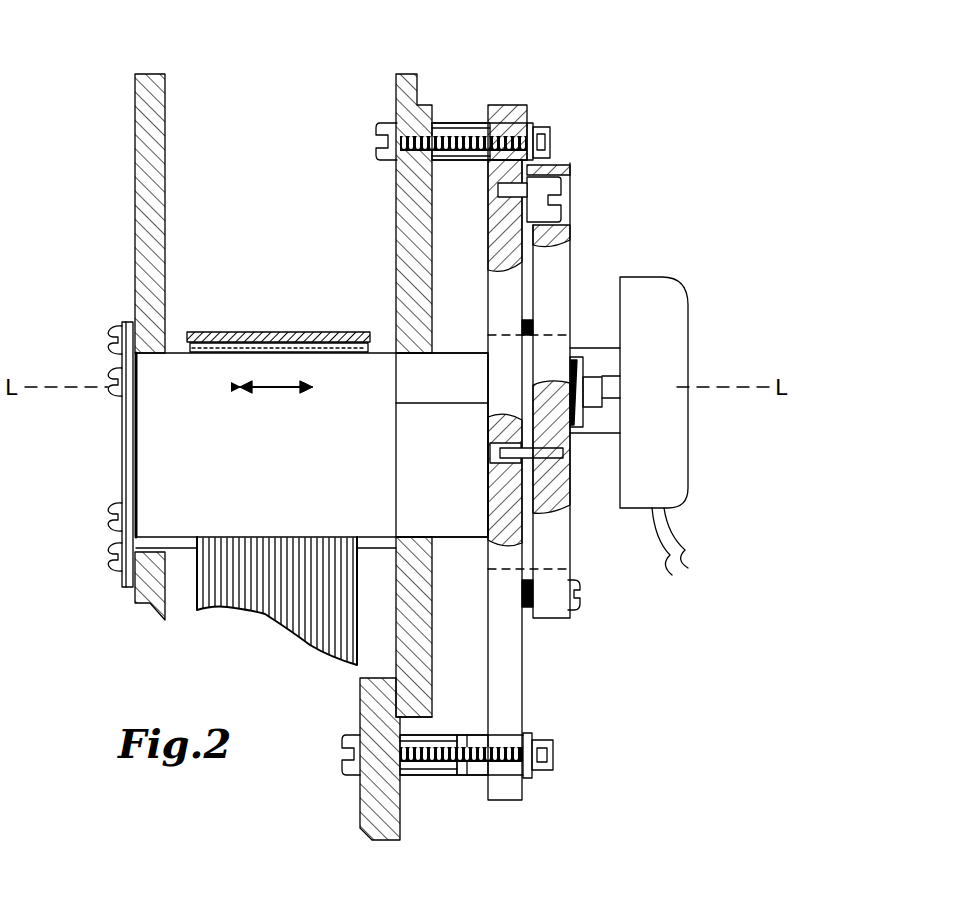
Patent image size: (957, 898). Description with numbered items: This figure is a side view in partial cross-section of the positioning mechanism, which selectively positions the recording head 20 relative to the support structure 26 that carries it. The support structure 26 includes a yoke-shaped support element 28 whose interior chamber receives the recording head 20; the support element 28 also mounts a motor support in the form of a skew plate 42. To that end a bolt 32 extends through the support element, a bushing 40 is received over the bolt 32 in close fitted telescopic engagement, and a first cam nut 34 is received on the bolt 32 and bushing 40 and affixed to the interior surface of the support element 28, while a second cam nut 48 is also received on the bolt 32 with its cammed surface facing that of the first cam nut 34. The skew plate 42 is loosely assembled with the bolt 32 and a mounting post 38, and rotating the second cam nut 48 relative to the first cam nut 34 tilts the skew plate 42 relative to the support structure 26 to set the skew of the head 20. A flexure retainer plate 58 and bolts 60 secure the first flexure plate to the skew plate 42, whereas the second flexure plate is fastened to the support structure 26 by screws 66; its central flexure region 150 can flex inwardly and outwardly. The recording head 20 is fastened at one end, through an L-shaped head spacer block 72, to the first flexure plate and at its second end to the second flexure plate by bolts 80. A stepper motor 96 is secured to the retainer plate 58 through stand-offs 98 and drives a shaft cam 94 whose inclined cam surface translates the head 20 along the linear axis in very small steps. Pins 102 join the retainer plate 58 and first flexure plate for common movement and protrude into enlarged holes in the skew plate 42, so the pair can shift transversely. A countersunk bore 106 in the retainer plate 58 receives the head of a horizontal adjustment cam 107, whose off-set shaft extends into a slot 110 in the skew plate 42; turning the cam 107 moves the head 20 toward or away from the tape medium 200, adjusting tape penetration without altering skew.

The recording head 20 is at (287, 469).
The support structure 26 is at (135, 181).
The yoke-shaped support element 28 is at (396, 213).
The bolt 32 is at (378, 128).
The first cam nut 34 is at (452, 123).
The mounting post 38 is at (508, 762).
The bushing 40 is at (533, 125).
The skew plate 42 is at (520, 700).
The second cam nut 48 is at (478, 126).
The flexure retainer plate 58 is at (570, 546).
The bolts 60 is at (580, 606).
The screws 66 is at (110, 338).
The head spacer block 72 is at (452, 360).
The bolts 80 is at (110, 380).
The shaft cam 94 is at (618, 385).
The stepper motor 96 is at (689, 424).
The stand-offs 98 is at (600, 357).
The pins 102 is at (565, 452).
The countersunk bore 106 is at (576, 194).
The horizontal adjustment cam 107 is at (562, 201).
The slot 110 is at (497, 189).
The central flexure region 150 is at (488, 462).
The tape medium 200 is at (275, 331).